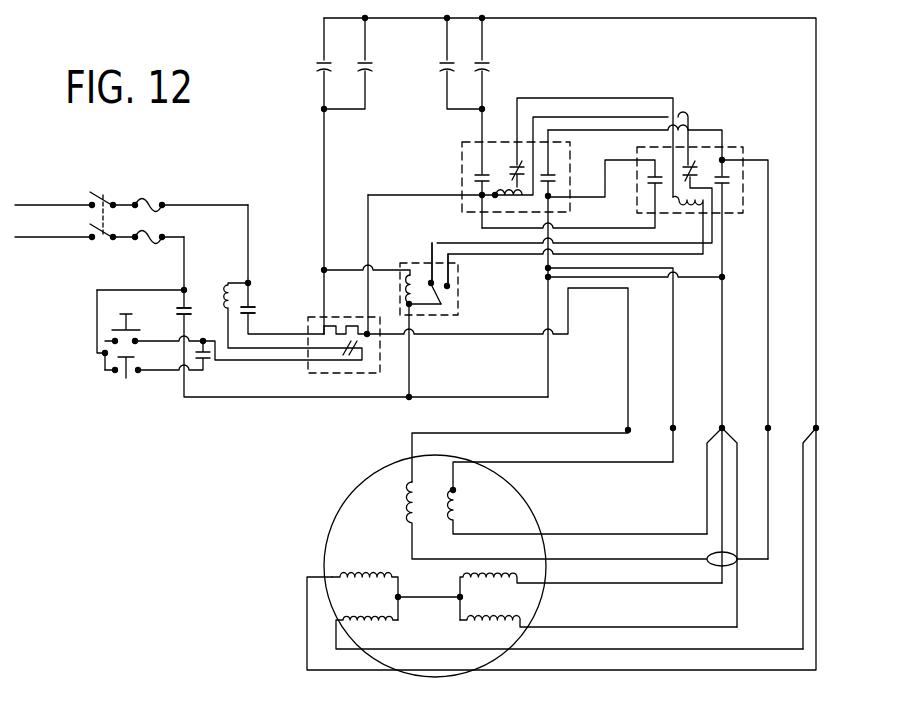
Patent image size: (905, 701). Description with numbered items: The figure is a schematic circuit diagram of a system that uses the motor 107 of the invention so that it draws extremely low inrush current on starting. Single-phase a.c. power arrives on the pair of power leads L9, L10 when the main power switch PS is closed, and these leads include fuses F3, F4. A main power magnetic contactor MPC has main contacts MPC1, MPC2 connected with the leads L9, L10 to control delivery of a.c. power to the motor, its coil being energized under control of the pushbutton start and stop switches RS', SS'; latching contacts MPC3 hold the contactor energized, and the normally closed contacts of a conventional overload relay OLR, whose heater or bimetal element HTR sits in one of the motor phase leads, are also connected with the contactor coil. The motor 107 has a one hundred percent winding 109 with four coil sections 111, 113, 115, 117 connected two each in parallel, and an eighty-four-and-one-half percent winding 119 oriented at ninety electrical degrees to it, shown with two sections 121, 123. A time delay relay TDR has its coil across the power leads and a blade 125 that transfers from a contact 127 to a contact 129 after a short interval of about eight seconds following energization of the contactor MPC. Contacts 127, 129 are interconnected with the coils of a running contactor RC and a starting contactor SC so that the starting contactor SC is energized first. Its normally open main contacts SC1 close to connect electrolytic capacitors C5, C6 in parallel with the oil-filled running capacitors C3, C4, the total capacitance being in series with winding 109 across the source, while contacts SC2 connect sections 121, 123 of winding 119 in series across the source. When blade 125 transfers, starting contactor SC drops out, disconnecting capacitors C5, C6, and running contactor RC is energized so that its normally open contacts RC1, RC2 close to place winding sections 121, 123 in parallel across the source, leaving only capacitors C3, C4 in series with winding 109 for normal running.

The power lead L9 is at (62, 205).
The power lead L10 is at (62, 237).
The main power switch PS is at (122, 192).
The fuse F3 is at (152, 205).
The fuse F4 is at (140, 238).
The main power magnetic contactor MPC is at (222, 298).
The main contact MPC1 is at (178, 312).
The main contact MPC2 is at (256, 312).
The latching contacts MPC3 is at (208, 360).
The pushbutton switch RS' is at (122, 330).
The pushbutton switch SS' is at (113, 385).
The heater or bimetal element HTR is at (352, 308).
The overload relay OLR is at (330, 373).
The time delay relay TDR is at (458, 287).
The blade 125 is at (440, 304).
The contact 127 is at (431, 282).
The contact 129 is at (450, 285).
The capacitor C3 is at (320, 66).
The capacitor C4 is at (360, 66).
The electrolytic capacitor C5 is at (456, 66).
The electrolytic capacitor C6 is at (488, 68).
The starting contactor SC is at (502, 142).
The main contacts SC1 is at (480, 177).
The contacts SC2 is at (556, 178).
The running contactor RC is at (743, 147).
The contacts RC1 is at (645, 190).
The contacts RC2 is at (730, 186).
The motor 107 is at (538, 520).
The 100 percent winding 109 is at (445, 635).
The coil section 111 is at (382, 620).
The coil section 113 is at (388, 577).
The coil section 115 is at (528, 628).
The coil section 117 is at (518, 580).
The 84.5 percent winding 119 is at (448, 494).
The winding section 121 is at (408, 496).
The winding section 123 is at (456, 500).